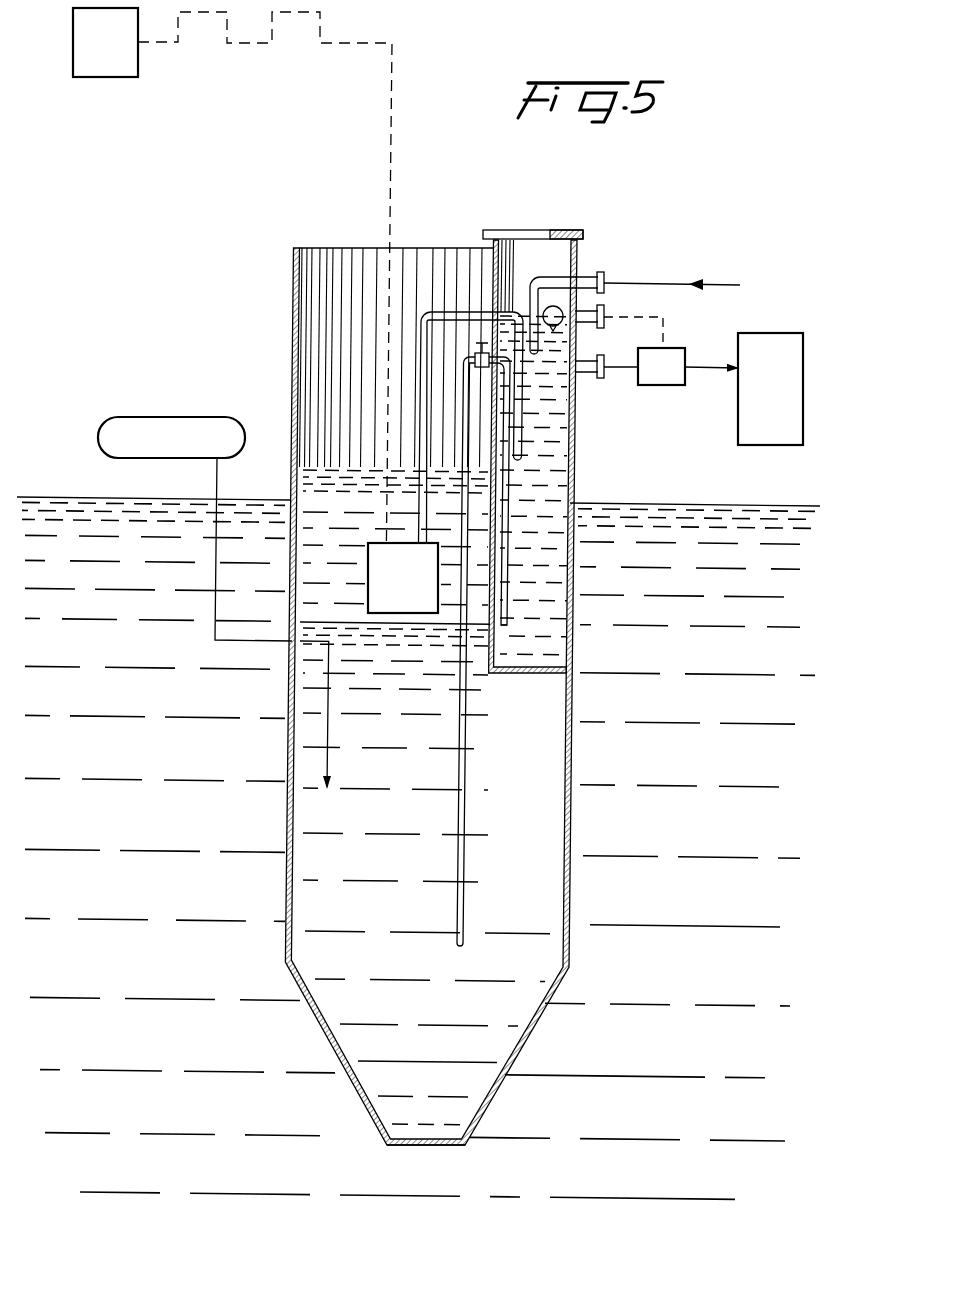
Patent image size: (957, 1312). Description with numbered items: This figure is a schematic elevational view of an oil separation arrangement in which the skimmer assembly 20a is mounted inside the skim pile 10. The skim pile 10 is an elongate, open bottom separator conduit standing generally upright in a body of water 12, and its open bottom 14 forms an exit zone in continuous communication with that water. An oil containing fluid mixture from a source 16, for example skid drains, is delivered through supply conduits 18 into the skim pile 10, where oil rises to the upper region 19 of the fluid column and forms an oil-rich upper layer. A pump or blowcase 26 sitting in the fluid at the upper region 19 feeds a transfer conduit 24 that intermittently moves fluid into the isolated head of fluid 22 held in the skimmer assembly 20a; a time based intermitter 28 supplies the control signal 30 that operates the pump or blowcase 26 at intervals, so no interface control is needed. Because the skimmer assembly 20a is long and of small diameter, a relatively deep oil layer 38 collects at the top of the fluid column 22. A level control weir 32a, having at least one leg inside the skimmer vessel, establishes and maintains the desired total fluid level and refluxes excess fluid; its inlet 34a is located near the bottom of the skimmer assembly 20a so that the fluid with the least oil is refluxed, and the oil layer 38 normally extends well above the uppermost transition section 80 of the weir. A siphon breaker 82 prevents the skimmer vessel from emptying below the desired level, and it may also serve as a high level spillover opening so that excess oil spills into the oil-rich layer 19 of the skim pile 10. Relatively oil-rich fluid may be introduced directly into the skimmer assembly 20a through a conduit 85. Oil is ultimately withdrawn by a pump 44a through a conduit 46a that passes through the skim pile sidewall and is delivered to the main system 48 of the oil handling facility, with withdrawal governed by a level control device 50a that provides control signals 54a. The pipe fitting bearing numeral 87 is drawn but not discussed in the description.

The skim pile 10 is at (280, 345).
The body of water 12 is at (684, 518).
The open bottom 14 is at (405, 1152).
The source 16 is at (126, 420).
The supply conduits 18 is at (215, 605).
The upper region 19 is at (378, 644).
The skimmer assembly 20a is at (593, 243).
The isolated head of fluid 22 is at (545, 518).
The transfer conduit 24 is at (427, 316).
The pump or blowcase 26 is at (433, 540).
The time based intermitter 28 is at (97, 74).
The control signal 30 is at (345, 45).
The level control weir 32a is at (452, 376).
The inlet 34a is at (505, 627).
The oil layer 38 is at (552, 349).
The pump 44a is at (678, 353).
The conduit 46a is at (582, 372).
The main system 48 is at (745, 406).
The level control device 50a is at (588, 316).
The control signals 54a is at (659, 315).
The uppermost transition section 80 is at (496, 368).
The siphon breaker 82 is at (481, 341).
The conduit 85 is at (582, 279).
The pipe 87 is at (495, 293).